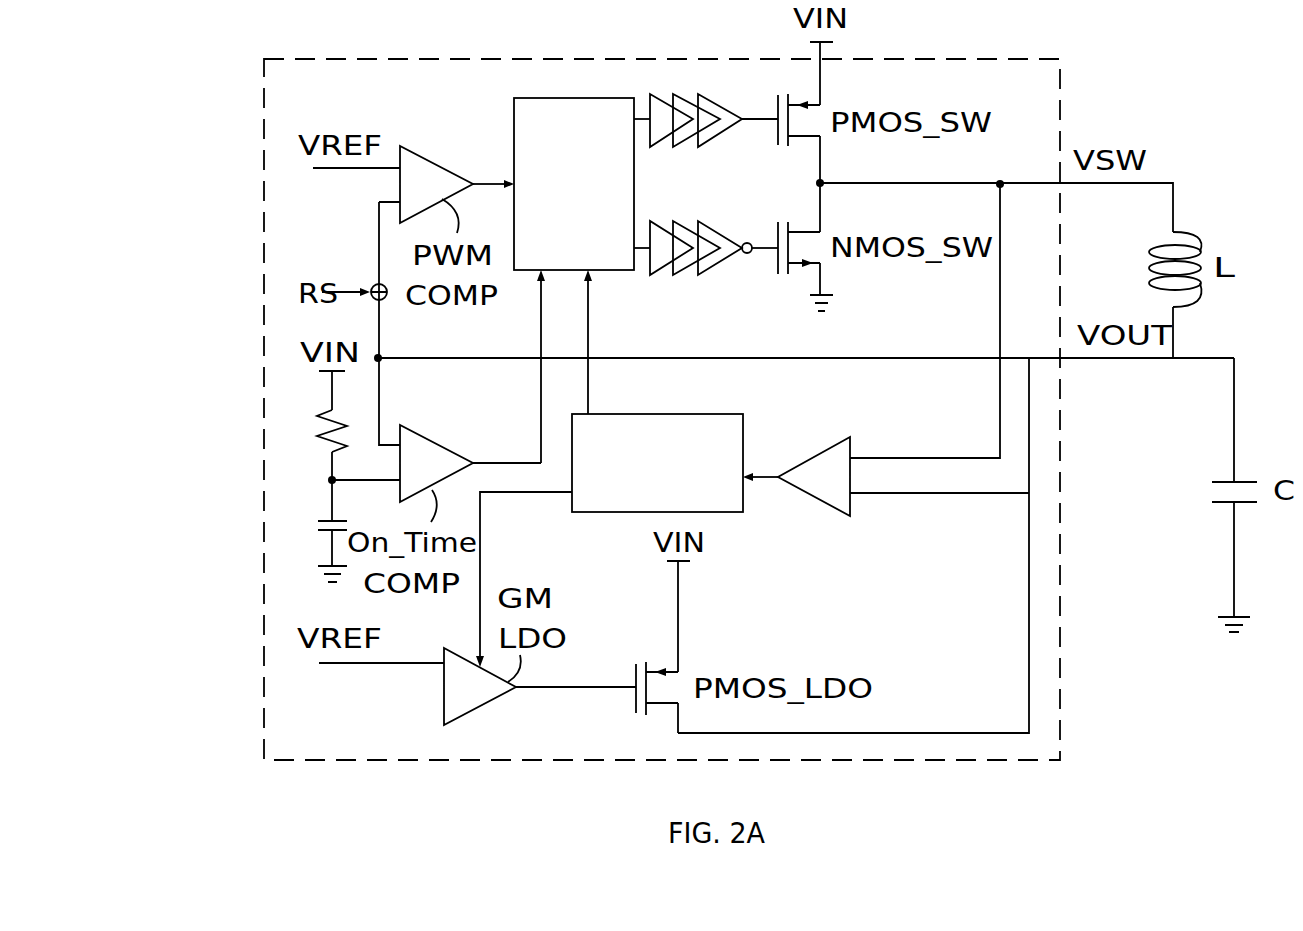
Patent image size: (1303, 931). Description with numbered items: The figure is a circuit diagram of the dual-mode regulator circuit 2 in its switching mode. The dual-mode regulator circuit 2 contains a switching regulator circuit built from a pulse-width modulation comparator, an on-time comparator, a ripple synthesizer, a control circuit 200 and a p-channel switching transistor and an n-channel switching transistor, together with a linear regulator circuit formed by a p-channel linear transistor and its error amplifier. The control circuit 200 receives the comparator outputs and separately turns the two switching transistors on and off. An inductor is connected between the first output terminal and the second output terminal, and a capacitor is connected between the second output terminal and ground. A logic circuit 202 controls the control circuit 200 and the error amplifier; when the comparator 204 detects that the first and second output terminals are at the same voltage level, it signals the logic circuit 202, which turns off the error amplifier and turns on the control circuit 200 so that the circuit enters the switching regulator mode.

The dual-mode regulator circuit 2 is at (264, 123).
The control circuit 200 is at (600, 238).
The logic circuit 202 is at (732, 501).
The comparator 204 is at (800, 462).